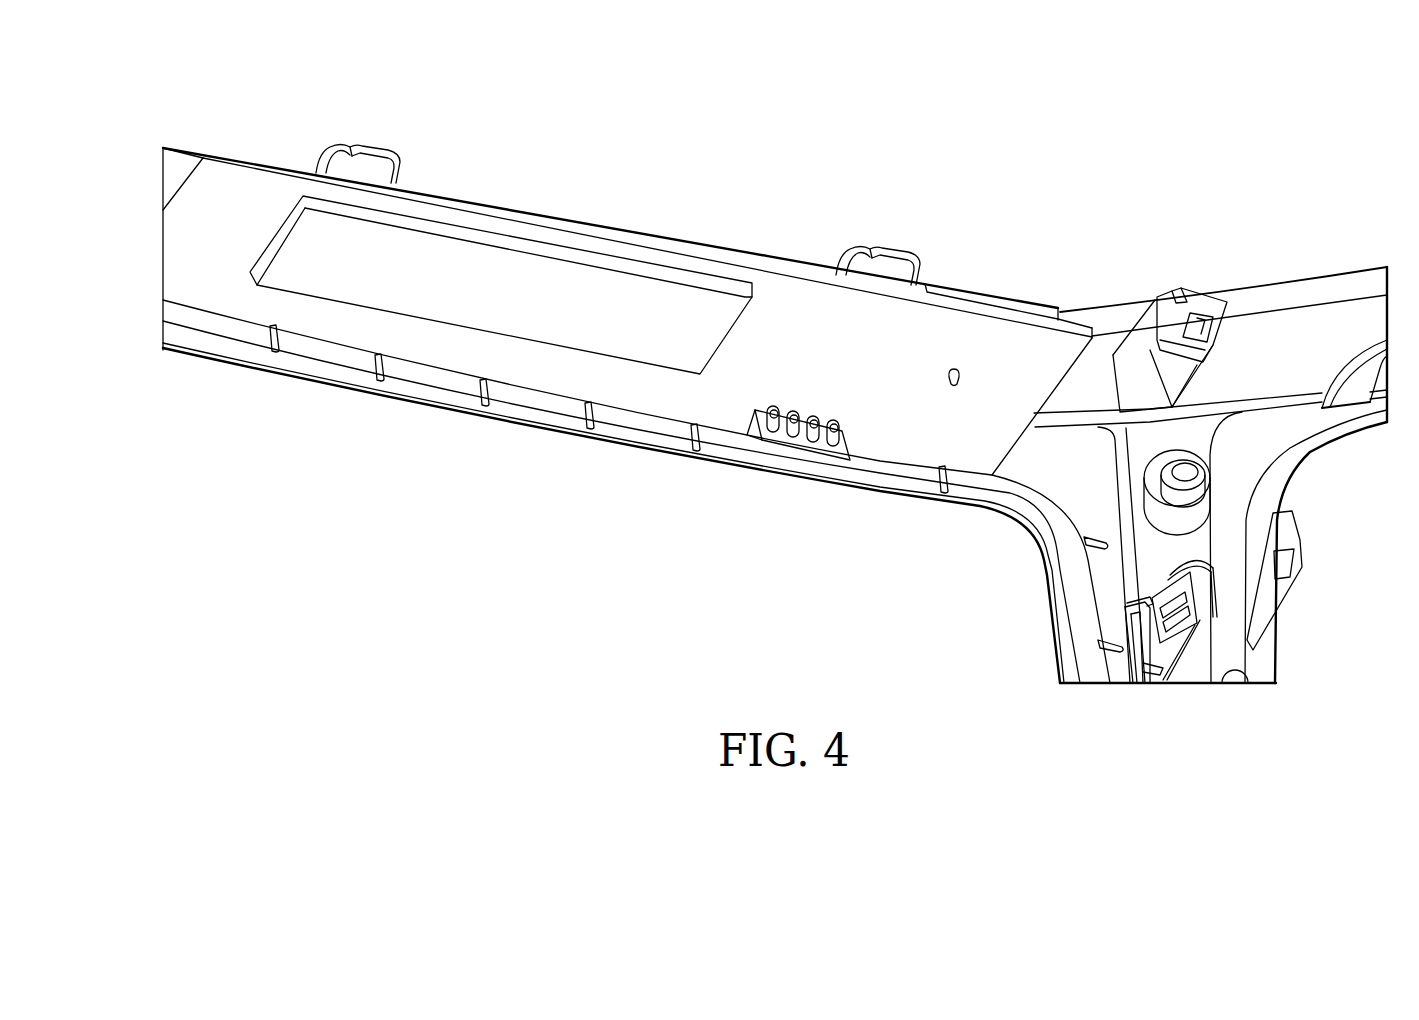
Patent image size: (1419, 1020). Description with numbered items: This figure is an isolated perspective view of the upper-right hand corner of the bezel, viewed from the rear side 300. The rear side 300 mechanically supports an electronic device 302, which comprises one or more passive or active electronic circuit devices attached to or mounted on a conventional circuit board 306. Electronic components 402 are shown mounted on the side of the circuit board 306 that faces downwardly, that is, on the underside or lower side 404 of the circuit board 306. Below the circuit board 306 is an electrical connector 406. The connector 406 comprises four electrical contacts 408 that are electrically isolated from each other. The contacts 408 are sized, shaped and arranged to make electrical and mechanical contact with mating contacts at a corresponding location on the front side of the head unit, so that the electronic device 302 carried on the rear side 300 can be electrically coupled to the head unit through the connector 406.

The rear side 300 is at (1275, 333).
The electronic device 302 is at (513, 192).
The circuit board 306 is at (200, 153).
The electronic components 402 is at (507, 313).
The lower side 404 is at (669, 403).
The electrical connector 406 is at (757, 447).
The electrical contacts 408 is at (798, 413).